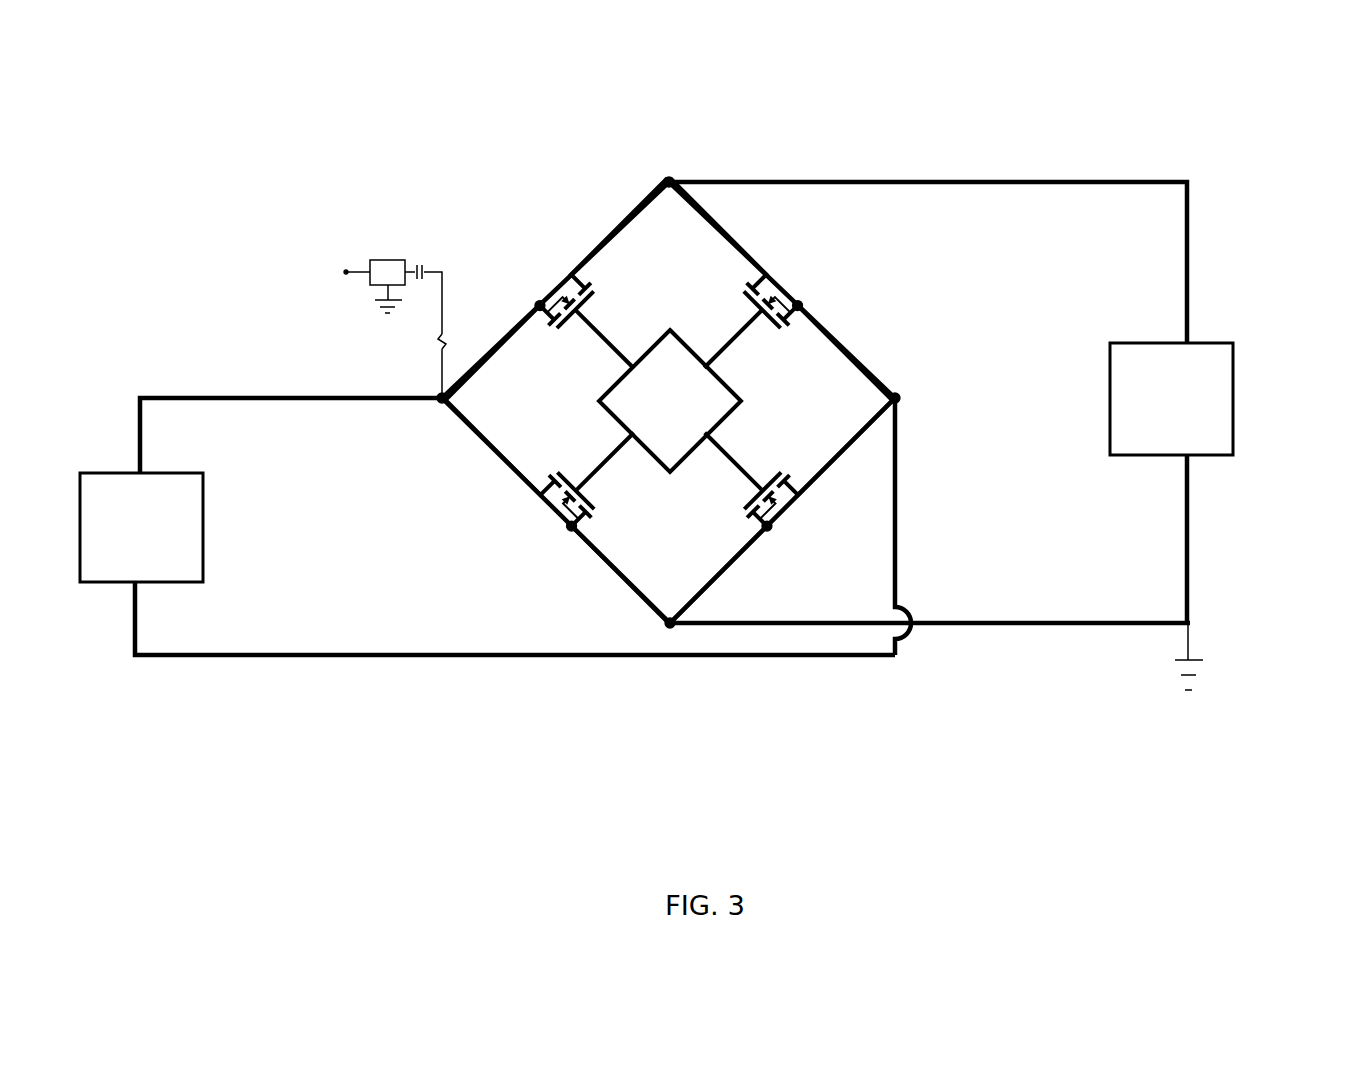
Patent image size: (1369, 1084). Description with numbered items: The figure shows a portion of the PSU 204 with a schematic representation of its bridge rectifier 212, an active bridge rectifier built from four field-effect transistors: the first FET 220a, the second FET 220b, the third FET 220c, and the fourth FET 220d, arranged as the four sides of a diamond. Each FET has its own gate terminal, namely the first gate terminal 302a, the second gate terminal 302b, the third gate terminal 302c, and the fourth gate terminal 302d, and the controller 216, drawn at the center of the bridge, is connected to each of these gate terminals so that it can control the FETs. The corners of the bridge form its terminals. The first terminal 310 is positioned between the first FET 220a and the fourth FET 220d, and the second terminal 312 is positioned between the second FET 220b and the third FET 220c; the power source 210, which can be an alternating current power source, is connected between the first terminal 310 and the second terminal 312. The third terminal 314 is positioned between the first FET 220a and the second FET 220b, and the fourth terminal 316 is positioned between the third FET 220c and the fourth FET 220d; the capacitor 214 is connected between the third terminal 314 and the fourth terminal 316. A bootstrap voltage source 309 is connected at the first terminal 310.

The PSU 204 is at (1217, 125).
The power source 210 is at (487, 526).
The bridge rectifier 212 is at (307, 190).
The capacitor 214 is at (1171, 399).
The controller 216 is at (670, 401).
The first FET 220a is at (530, 262).
The second FET 220b is at (808, 270).
The third FET 220c is at (802, 528).
The fourth FET 220d is at (520, 542).
The first gate terminal 302a is at (565, 342).
The second gate terminal 302b is at (740, 310).
The third gate terminal 302c is at (765, 463).
The fourth gate terminal 302d is at (605, 492).
The bootstrap voltage source 309 is at (318, 268).
The first terminal 310 is at (435, 415).
The second terminal 312 is at (905, 385).
The third terminal 314 is at (668, 158).
The fourth terminal 316 is at (650, 628).